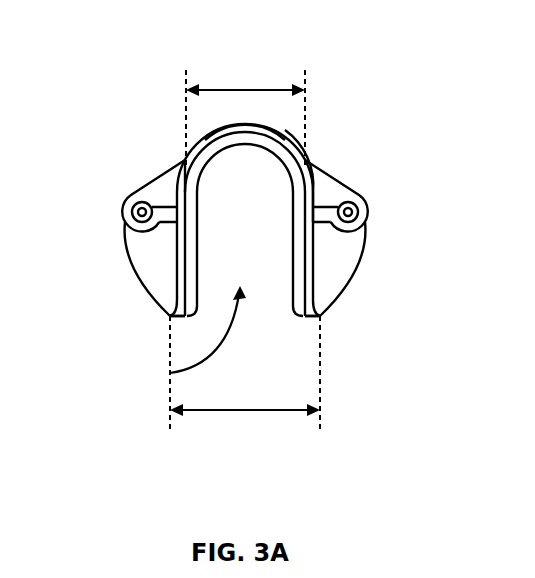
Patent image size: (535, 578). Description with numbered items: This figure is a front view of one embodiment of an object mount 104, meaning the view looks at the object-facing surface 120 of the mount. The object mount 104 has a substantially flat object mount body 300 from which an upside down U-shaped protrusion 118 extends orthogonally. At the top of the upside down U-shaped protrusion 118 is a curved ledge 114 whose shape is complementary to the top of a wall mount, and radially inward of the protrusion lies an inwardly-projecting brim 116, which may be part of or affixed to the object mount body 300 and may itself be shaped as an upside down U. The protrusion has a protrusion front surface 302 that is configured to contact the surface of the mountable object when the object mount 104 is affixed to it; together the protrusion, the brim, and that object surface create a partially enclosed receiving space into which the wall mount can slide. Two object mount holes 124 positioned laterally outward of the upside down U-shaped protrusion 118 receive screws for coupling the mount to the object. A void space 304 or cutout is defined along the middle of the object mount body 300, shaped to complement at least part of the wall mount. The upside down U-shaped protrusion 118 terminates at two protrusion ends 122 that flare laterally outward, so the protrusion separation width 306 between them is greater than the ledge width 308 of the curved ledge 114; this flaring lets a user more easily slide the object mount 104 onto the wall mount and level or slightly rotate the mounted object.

The object mount 104 is at (245, 191).
The curved ledge 114 is at (237, 130).
The inwardly-projecting brim 116 is at (199, 167).
The upside down U-shaped protrusion 118 is at (287, 132).
The object-facing surface 120 is at (141, 260).
The protrusion ends 122 is at (167, 318).
The object mount holes 124 is at (138, 212).
The object mount body 300 is at (325, 258).
The protrusion front surface 302 is at (318, 192).
The void space 304 is at (172, 373).
The protrusion separation width 306 is at (253, 412).
The ledge width 308 is at (263, 88).